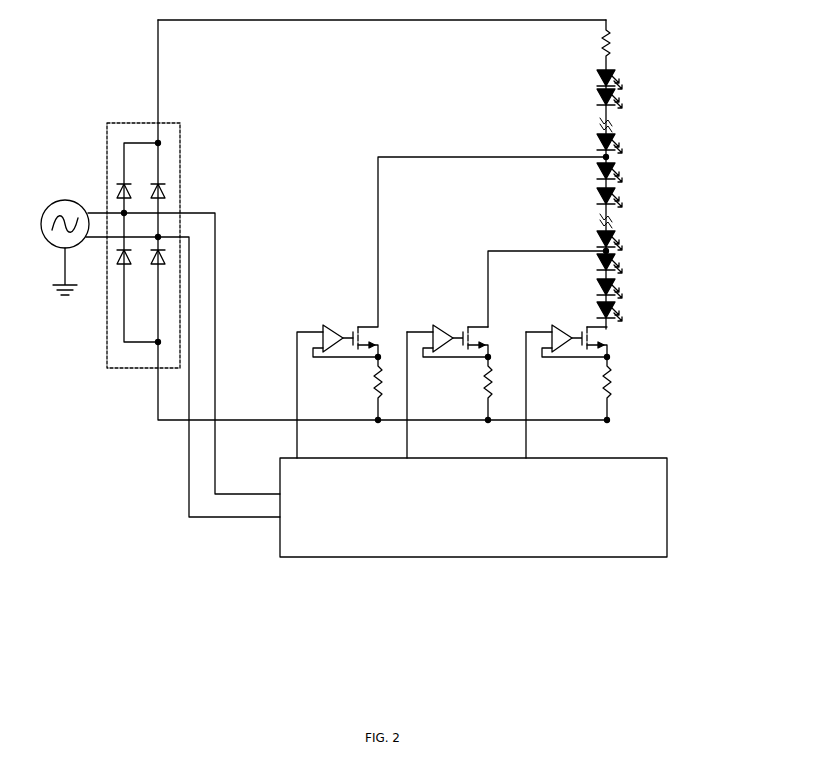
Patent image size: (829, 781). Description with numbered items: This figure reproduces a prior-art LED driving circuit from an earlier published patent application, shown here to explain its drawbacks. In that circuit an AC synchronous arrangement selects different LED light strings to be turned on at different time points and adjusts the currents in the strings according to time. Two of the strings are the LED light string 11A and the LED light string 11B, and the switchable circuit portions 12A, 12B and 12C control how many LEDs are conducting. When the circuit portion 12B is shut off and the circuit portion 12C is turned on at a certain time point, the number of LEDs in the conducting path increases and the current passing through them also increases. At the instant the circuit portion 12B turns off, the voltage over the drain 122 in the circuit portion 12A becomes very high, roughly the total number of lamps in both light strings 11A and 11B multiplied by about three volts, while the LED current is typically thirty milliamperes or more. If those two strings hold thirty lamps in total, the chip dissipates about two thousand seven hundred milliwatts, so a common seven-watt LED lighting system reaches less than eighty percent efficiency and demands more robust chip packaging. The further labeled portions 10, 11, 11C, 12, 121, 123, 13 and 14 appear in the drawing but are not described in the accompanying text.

The rectifier circuit 10 is at (172, 127).
The light emitting unit (LED string) 11 is at (684, 174).
The LED light string 11A is at (632, 100).
The LED light string 11B is at (632, 180).
The third light emitting element group 11C is at (661, 281).
The drive circuits 12 is at (557, 150).
The circuit portion 12A is at (444, 307).
The circuit portion 12B is at (452, 320).
The circuit portion 12C is at (566, 319).
The operational amplifier 121 is at (335, 325).
The drain 122 is at (372, 326).
The resistor 123 is at (377, 384).
The control unit 13 is at (473, 507).
The AC power source 14 is at (65, 200).